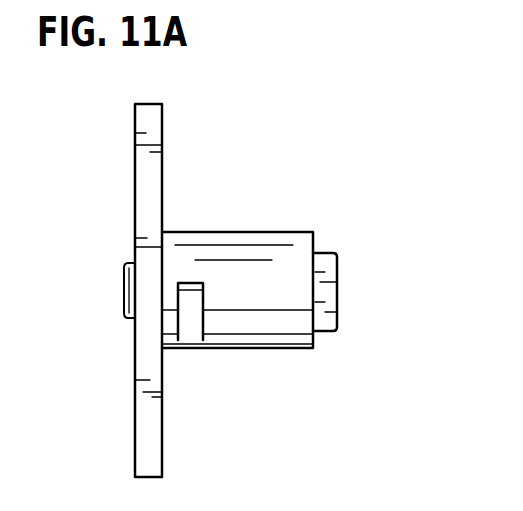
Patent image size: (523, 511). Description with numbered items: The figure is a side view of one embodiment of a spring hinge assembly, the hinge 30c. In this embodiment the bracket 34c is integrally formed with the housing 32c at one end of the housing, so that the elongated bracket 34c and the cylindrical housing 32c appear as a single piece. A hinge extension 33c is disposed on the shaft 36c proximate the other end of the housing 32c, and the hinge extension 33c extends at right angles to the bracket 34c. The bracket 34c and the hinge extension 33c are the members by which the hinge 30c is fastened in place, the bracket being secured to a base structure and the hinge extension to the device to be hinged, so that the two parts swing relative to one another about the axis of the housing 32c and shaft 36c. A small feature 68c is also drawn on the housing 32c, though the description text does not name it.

The lock assembly 30c is at (253, 142).
The cylinder body 32c is at (253, 238).
The end cap 33c is at (338, 268).
The mounting plate 34c is at (162, 172).
The boss 36c is at (124, 272).
The key tab 68c is at (190, 300).